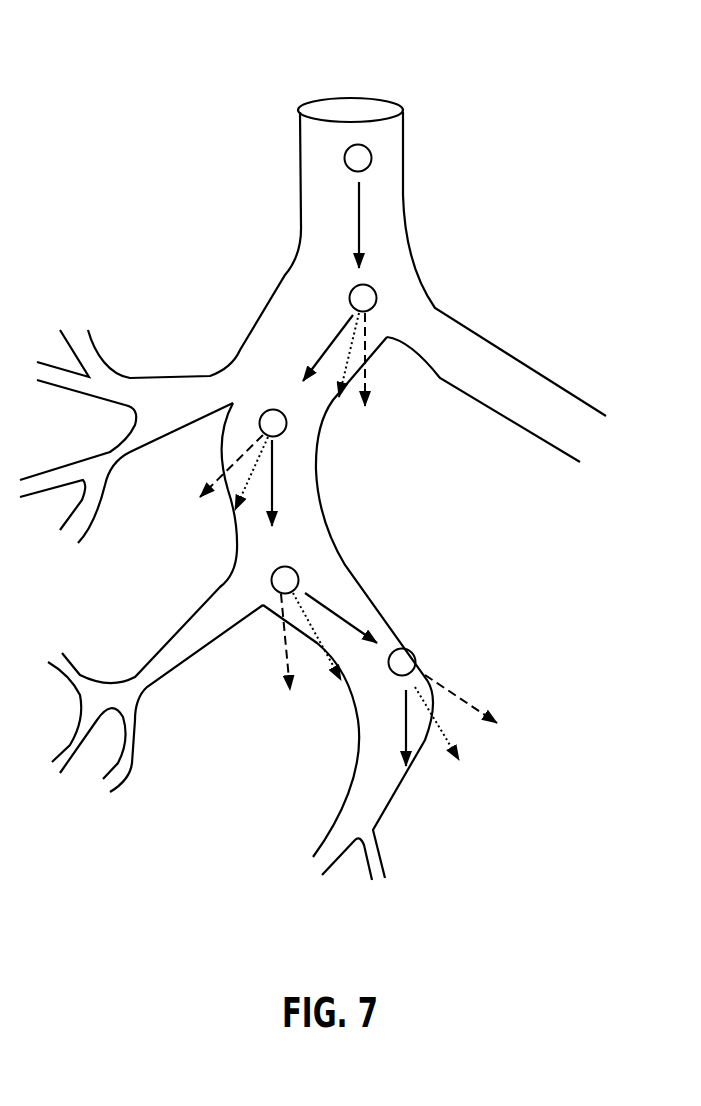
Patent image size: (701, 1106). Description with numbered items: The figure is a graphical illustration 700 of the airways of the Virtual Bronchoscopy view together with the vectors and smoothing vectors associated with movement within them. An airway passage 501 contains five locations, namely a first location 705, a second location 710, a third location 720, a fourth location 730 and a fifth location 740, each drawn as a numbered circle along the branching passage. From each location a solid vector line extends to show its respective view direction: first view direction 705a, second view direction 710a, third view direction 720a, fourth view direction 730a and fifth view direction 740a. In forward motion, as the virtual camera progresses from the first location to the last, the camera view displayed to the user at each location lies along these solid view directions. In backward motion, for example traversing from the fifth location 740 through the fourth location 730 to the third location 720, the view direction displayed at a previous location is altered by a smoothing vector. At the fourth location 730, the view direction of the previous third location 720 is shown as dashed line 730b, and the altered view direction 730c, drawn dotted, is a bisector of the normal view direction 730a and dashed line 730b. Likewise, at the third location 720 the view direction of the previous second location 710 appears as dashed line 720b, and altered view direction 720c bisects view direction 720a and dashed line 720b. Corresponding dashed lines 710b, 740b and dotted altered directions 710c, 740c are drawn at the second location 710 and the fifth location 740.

The graphical illustration 700 is at (534, 58).
The airway passage 501 is at (292, 260).
The location L0 705 is at (372, 157).
The view direction D0 705a is at (360, 205).
The location L1 710 is at (377, 293).
The view direction D1 710a is at (313, 367).
The dashed line view direction at location L1 710b is at (365, 377).
The altered view direction at location L1 710c is at (348, 380).
The location L2 720 is at (268, 410).
The view direction D2 720a is at (275, 524).
The dashed line view direction of previous location L1 720b is at (220, 477).
The altered view direction 720c is at (227, 510).
The location L3 730 is at (297, 565).
The view direction D3 730a is at (357, 625).
The dashed line view direction of previous location L2 730b is at (285, 650).
The altered view direction 730c is at (330, 670).
The location L4 740 is at (415, 655).
The view direction D4 740a is at (410, 760).
The dashed line view direction at location L4 740b is at (472, 710).
The altered view direction at location L4 740c is at (450, 740).